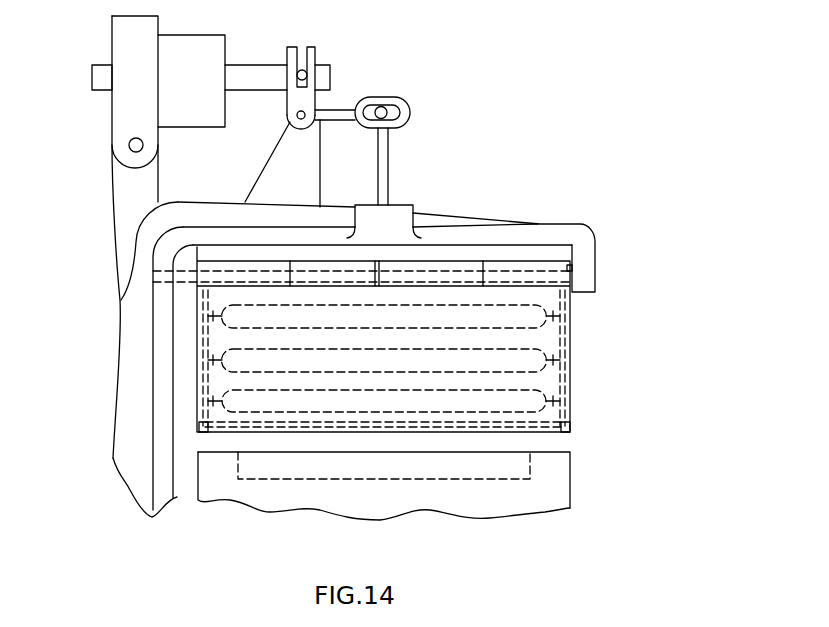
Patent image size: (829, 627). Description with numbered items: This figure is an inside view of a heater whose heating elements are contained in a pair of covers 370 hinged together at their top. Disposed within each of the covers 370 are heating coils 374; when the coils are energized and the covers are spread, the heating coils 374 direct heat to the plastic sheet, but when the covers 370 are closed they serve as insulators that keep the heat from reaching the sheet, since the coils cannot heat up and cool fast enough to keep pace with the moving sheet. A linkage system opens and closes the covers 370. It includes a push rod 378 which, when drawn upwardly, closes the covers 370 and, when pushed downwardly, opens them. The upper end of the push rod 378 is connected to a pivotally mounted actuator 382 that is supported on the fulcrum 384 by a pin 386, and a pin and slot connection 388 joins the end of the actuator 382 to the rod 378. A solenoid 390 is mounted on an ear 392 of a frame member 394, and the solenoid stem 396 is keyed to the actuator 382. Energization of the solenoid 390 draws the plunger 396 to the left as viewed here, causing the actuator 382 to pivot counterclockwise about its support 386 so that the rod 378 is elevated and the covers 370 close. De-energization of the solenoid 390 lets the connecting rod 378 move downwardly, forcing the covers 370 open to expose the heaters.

The covers 370 is at (573, 407).
The heating coils 374 is at (573, 382).
The push rod 378 is at (387, 170).
The actuator 382 is at (345, 108).
The fulcrum 384 is at (313, 185).
The pin 386 is at (300, 121).
The pin and slot connection 388 is at (408, 105).
The solenoid 390 is at (218, 51).
The ear 392 is at (148, 212).
The frame member 394 is at (127, 374).
The solenoid stem 396 is at (325, 72).